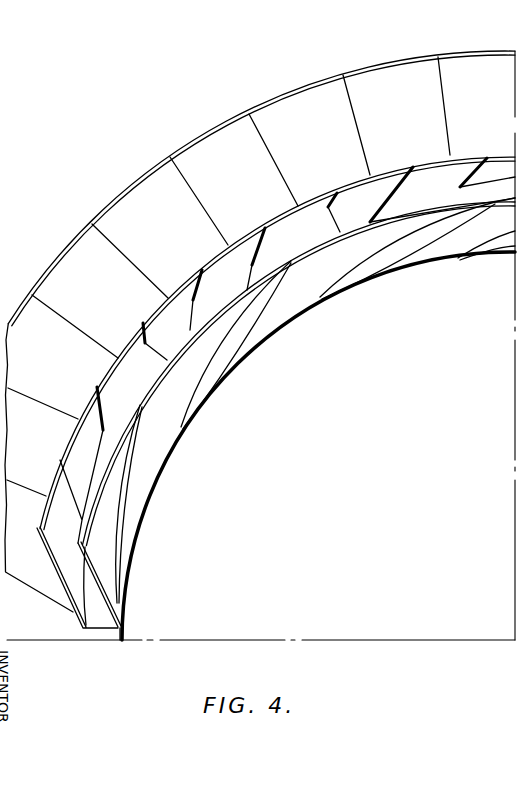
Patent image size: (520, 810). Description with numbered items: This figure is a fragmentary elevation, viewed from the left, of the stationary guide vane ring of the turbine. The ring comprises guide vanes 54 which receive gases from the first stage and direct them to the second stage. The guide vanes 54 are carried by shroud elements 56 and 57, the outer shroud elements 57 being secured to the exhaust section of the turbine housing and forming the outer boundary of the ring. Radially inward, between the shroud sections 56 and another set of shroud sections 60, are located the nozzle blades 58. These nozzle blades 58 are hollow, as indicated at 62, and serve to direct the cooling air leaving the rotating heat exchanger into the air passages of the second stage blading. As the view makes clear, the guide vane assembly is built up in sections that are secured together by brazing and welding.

The guide vanes 54 is at (224, 191).
The shroud elements 56 is at (392, 182).
The shroud elements 57 is at (241, 114).
The nozzle blades 58 is at (292, 235).
The shroud sections 60 is at (375, 245).
The hollow 62 is at (440, 233).